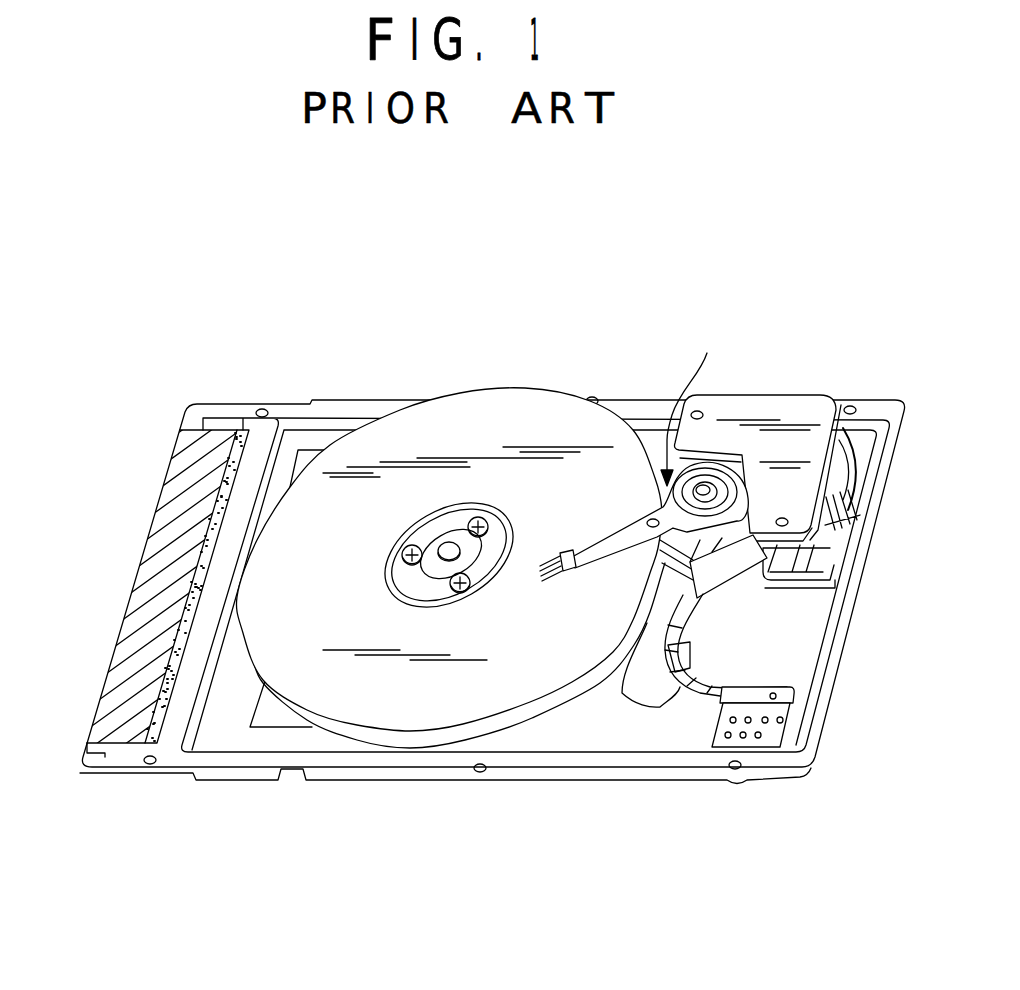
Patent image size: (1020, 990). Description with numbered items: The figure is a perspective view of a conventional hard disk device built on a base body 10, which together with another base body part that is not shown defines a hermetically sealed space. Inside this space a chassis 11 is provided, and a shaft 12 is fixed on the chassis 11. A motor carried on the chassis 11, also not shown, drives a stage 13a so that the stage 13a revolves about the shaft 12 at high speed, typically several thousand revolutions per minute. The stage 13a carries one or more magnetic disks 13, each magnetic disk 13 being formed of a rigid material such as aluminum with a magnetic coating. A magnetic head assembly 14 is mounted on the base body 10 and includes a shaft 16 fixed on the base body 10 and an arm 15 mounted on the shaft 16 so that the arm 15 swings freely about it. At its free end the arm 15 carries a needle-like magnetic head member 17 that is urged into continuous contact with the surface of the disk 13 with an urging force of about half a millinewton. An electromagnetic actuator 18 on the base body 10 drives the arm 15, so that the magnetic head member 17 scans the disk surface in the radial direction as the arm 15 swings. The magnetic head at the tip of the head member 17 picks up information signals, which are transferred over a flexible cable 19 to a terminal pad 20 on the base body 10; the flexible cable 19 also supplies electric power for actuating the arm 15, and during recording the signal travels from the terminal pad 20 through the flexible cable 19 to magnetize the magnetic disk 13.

The base body 10 is at (676, 720).
The chassis 11 is at (273, 714).
The shaft 12 is at (445, 556).
The magnetic disk 13 is at (458, 442).
The stage 13a is at (440, 588).
The magnetic head assembly 14 is at (692, 404).
The arm 15 is at (630, 540).
The shaft 16 is at (718, 488).
The needle-like magnetic head member 17 is at (510, 596).
The electromagnetic actuator 18 is at (787, 413).
The flexible cable 19 is at (688, 600).
The terminal pad 20 is at (777, 718).